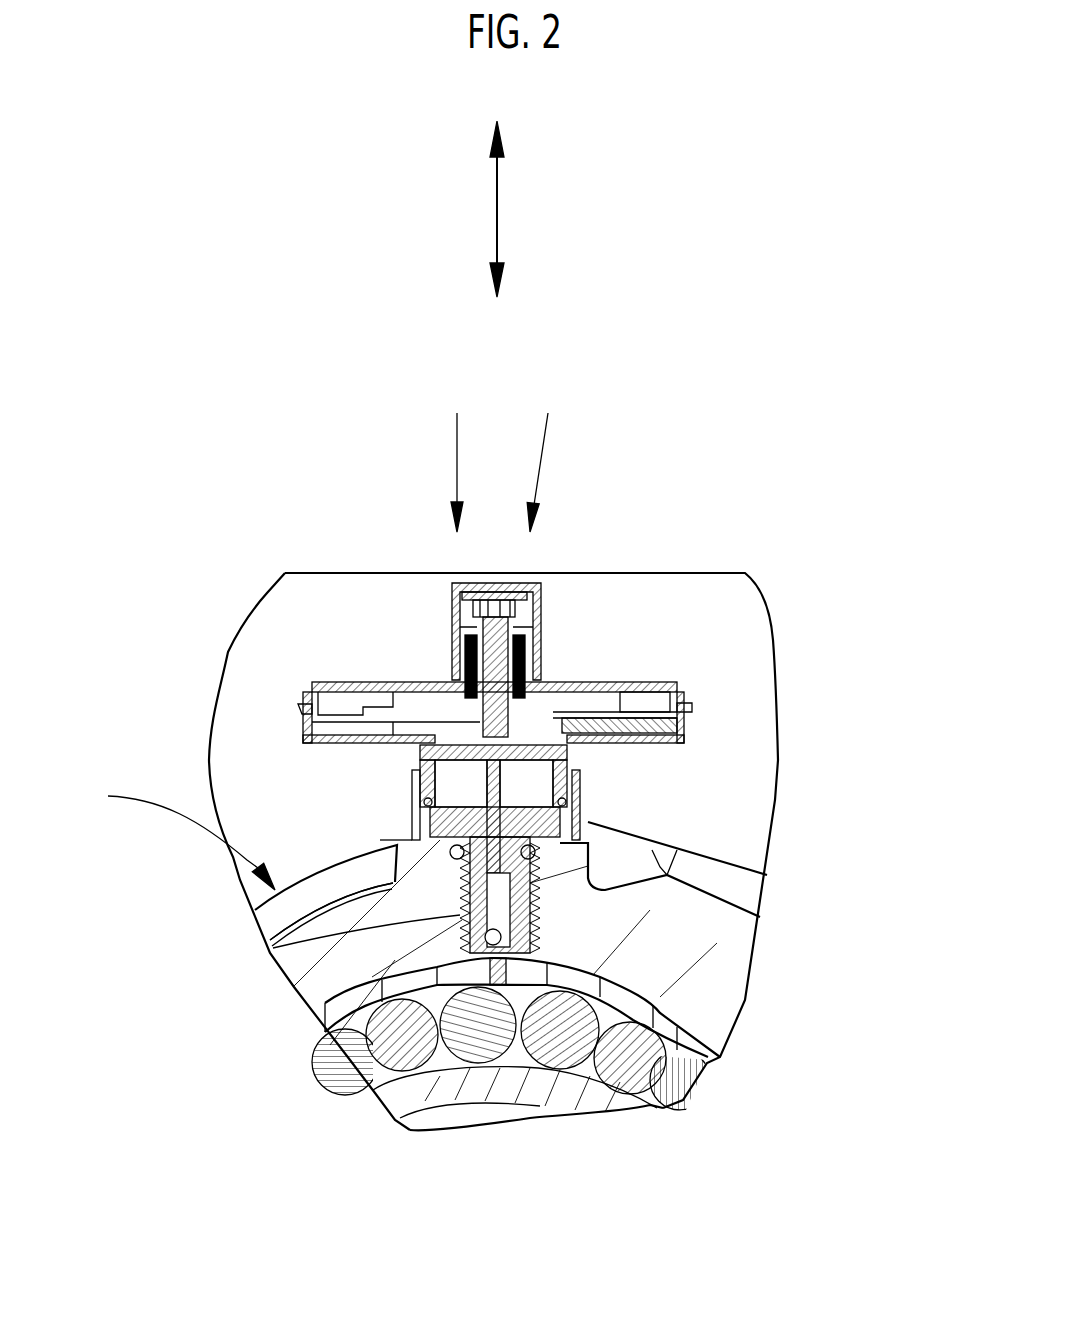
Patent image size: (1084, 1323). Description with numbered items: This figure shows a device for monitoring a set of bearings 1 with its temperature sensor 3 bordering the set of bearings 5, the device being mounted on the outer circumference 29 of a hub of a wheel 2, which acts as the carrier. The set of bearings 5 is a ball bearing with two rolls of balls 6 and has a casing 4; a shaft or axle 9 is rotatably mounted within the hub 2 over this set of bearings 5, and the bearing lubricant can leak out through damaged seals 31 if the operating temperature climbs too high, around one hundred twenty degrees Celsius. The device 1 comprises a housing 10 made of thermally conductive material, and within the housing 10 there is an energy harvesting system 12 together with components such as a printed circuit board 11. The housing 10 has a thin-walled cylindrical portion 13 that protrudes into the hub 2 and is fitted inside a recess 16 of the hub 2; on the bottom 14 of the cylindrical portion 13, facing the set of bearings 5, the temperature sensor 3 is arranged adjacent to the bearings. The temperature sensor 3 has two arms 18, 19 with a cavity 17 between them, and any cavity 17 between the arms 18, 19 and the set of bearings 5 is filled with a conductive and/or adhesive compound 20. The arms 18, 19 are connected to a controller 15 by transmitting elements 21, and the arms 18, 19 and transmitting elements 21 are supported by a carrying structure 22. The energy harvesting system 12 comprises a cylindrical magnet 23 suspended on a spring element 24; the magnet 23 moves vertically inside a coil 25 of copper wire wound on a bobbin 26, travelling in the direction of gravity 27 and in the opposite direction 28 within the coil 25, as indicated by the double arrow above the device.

The device for monitoring a set of bearings 1 is at (459, 456).
The hub of a wheel 2 is at (667, 970).
The temperature sensor 3 is at (513, 1065).
The casing 4 is at (677, 1087).
The set of bearings 5 is at (410, 1098).
The balls 6 is at (630, 1073).
The shaft or axle 9 is at (487, 1112).
The housing 10 is at (622, 692).
The printed circuit board 11 is at (666, 593).
The energy harvesting system 12 is at (545, 456).
The cylindrical portion 13 is at (275, 950).
The bottom 14 is at (493, 952).
The controller 15 is at (642, 727).
The recess 16 is at (235, 916).
The cavity 17 is at (311, 936).
The arm 18 is at (669, 805).
The arm 19 is at (669, 805).
The conductive and/or adhesive compound 20 is at (311, 936).
The transmitting elements 21 is at (570, 840).
The carrying structure 22 is at (550, 823).
The cylindrical magnet 23 is at (500, 632).
The spring element 24 is at (460, 716).
The coil 25 is at (447, 665).
The bobbin 26 is at (450, 603).
The direction of gravity 27 is at (573, 209).
The opposite direction 28 is at (497, 226).
The outer circumference 29 is at (174, 838).
The seals 31 is at (536, 850).